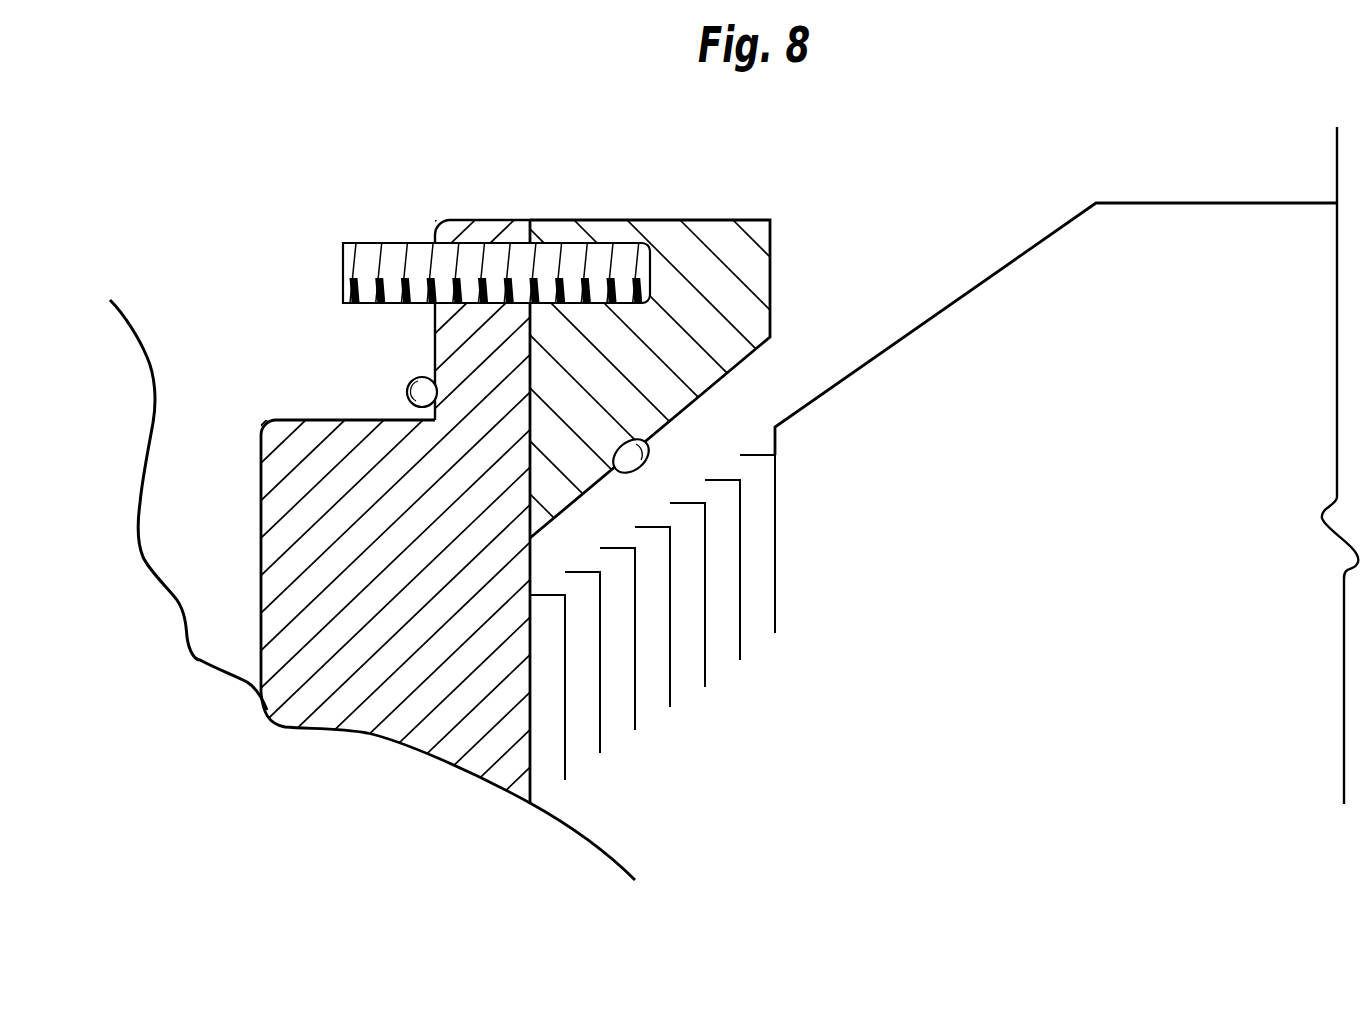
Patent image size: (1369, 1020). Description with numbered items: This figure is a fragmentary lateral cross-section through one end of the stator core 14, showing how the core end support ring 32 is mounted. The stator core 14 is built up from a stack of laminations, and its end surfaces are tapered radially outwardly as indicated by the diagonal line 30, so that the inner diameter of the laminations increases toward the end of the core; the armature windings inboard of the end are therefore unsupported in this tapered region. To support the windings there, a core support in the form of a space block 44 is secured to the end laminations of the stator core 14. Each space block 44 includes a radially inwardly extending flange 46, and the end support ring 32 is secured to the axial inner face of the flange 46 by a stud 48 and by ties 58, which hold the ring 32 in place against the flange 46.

The stator core 14 is at (653, 692).
The diagonal line 30 is at (1040, 243).
The core end support ring 32 is at (740, 218).
The space block 44 is at (259, 464).
The flange 46 is at (455, 333).
The stud 48 is at (367, 241).
The tie 58 is at (406, 393).